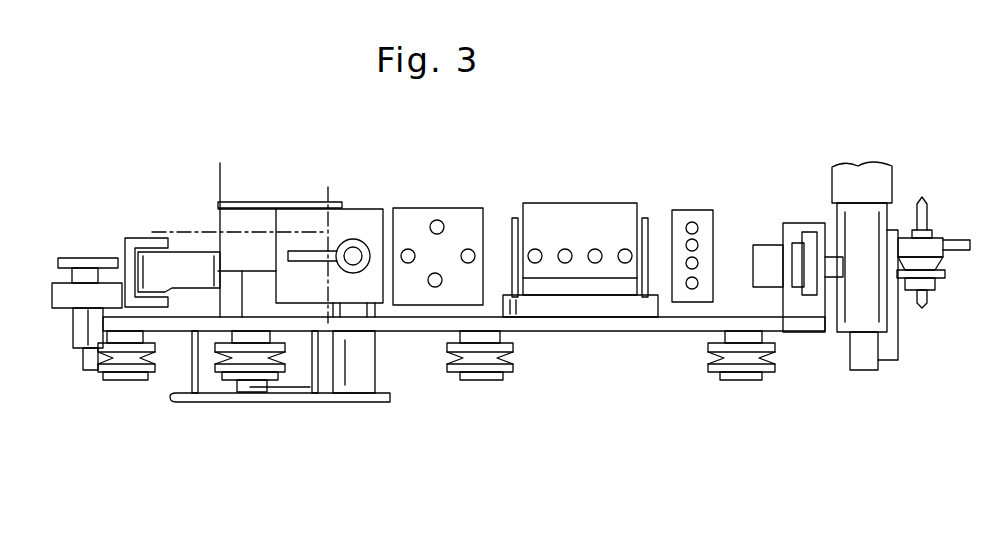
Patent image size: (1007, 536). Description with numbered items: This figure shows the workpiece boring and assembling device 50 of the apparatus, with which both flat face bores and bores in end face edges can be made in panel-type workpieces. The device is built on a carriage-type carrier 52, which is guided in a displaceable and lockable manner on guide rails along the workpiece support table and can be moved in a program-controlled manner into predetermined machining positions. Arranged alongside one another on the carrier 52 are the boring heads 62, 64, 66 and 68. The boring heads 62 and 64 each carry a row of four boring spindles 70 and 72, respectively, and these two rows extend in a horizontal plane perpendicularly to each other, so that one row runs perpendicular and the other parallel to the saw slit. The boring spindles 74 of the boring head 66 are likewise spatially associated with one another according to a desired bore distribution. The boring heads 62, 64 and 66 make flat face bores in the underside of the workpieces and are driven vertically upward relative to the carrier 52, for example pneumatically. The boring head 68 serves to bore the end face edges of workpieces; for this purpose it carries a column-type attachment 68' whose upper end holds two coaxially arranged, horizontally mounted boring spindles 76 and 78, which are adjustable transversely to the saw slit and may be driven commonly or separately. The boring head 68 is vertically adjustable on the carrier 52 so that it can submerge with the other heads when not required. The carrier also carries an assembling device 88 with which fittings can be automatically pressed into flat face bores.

The workpiece boring and assembling device 50 is at (541, 349).
The carriage-type carrier 52 is at (581, 326).
The boring head 62 is at (707, 216).
The boring head 64 is at (603, 222).
The boring head 66 is at (412, 217).
The boring head 68 is at (924, 212).
The column-type attachment 68' is at (813, 224).
The boring spindles 70 is at (691, 226).
The boring spindles 72 is at (536, 252).
The boring spindles 74 is at (438, 222).
The boring spindle 76 is at (923, 200).
The boring spindle 78 is at (924, 308).
The assembling device 88 is at (293, 232).